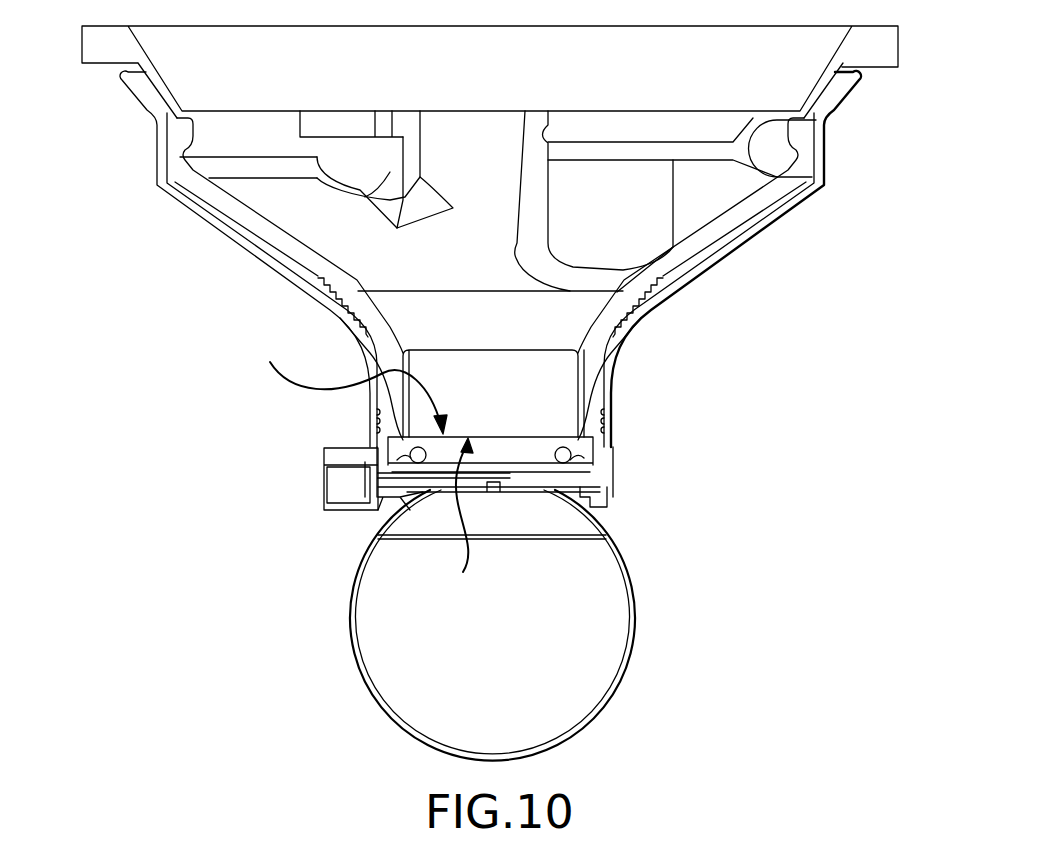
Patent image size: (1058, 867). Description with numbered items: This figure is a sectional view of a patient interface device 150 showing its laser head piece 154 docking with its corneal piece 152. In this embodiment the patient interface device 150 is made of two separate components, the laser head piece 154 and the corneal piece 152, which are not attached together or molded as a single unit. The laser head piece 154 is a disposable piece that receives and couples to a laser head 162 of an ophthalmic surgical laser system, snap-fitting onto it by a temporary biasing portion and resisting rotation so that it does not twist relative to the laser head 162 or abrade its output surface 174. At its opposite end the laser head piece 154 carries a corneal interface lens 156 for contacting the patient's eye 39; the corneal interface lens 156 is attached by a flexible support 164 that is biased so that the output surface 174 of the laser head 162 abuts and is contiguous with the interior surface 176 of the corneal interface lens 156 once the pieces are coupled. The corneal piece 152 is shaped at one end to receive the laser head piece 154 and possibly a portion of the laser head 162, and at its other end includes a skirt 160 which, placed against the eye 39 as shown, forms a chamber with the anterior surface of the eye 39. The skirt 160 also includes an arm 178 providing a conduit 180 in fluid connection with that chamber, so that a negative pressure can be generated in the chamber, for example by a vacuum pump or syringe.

The eye 39 is at (610, 694).
The patient interface device 150 is at (230, 402).
The corneal piece 152 is at (766, 226).
The laser head piece 154 is at (612, 352).
The corneal interface lens 156 is at (548, 450).
The skirt 160 is at (612, 512).
The laser head 162 is at (248, 220).
The flexible support 164 is at (567, 454).
The output surface 174 is at (347, 385).
The interior surface 176 is at (462, 517).
The arm 178 is at (358, 510).
The conduit 180 is at (332, 490).